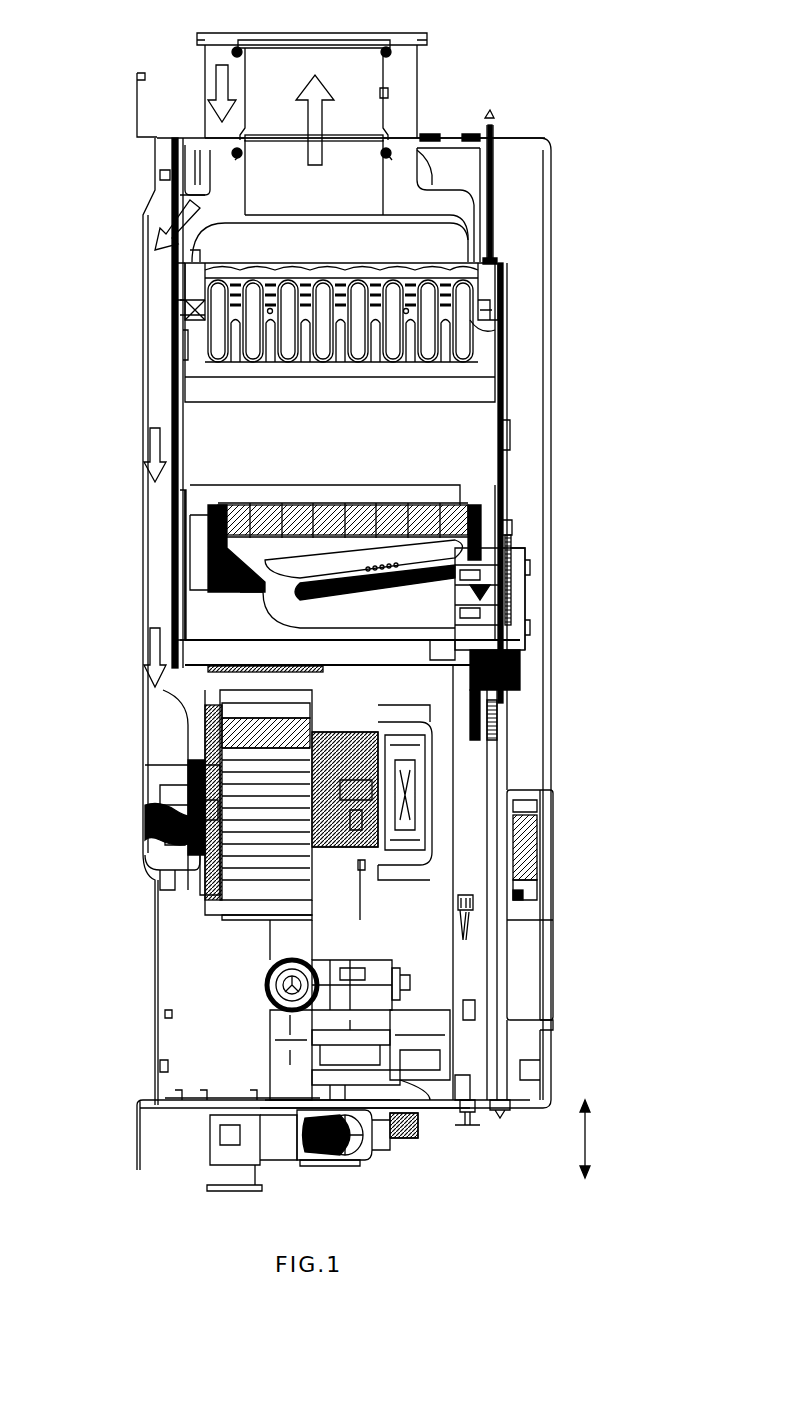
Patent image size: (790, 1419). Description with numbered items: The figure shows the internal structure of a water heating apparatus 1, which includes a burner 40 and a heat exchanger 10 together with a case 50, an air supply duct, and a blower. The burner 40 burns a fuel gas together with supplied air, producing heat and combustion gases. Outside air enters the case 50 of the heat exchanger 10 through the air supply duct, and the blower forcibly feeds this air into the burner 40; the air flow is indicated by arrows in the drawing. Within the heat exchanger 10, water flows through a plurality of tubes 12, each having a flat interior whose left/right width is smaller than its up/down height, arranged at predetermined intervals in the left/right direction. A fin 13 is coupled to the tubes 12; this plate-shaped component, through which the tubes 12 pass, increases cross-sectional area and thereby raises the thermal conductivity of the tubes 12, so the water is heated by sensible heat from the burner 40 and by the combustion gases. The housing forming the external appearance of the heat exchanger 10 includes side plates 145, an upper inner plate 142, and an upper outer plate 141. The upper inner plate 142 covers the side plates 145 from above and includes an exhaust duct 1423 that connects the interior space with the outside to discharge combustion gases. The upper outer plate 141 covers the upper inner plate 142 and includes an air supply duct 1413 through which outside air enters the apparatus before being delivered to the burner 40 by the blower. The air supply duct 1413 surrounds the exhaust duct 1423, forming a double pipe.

The water heating apparatus 1 is at (463, 1210).
The heat exchanger 10 is at (552, 250).
The tube 12 is at (475, 342).
The fin 13 is at (495, 328).
The burner 40 is at (478, 592).
The case 50 is at (546, 745).
The upper outer plate 141 is at (492, 150).
The upper inner plate 142 is at (490, 210).
The side plate 145 is at (187, 360).
The air supply duct 1413 is at (424, 140).
The exhaust duct 1423 is at (395, 170).